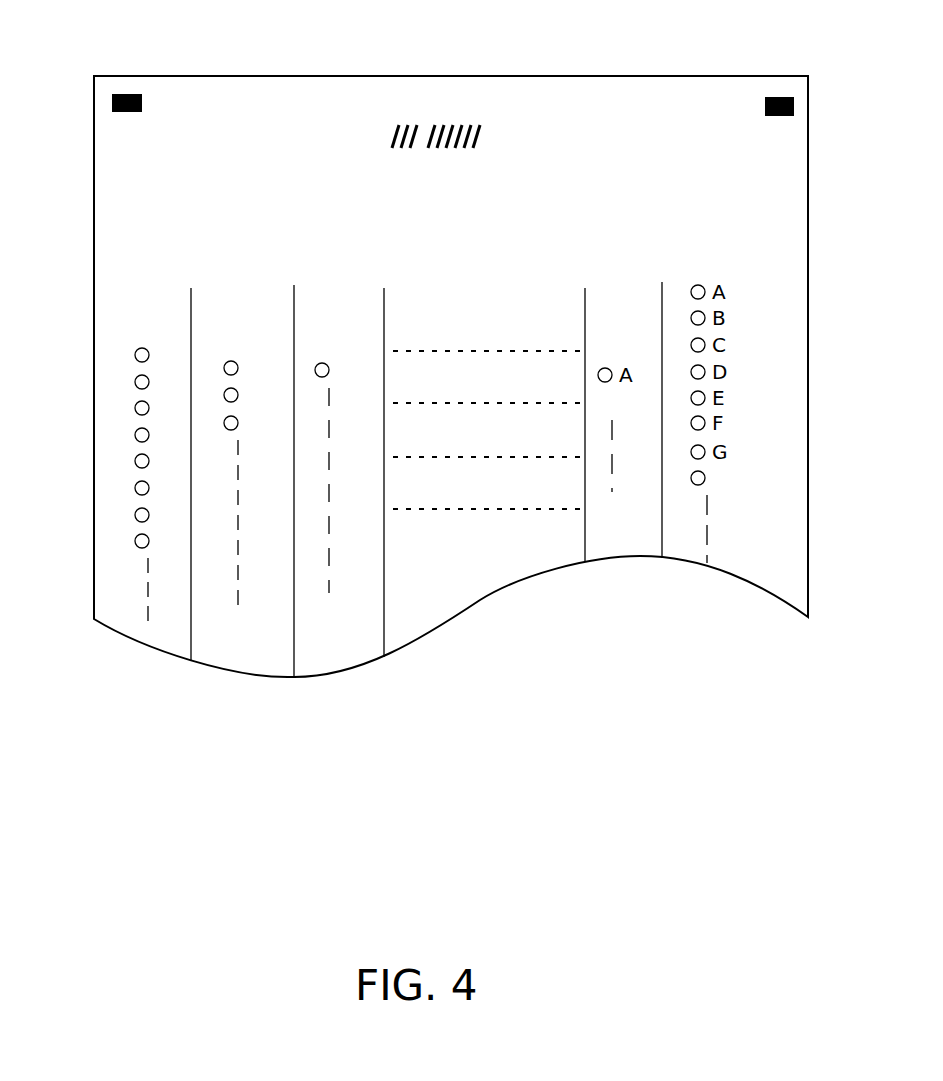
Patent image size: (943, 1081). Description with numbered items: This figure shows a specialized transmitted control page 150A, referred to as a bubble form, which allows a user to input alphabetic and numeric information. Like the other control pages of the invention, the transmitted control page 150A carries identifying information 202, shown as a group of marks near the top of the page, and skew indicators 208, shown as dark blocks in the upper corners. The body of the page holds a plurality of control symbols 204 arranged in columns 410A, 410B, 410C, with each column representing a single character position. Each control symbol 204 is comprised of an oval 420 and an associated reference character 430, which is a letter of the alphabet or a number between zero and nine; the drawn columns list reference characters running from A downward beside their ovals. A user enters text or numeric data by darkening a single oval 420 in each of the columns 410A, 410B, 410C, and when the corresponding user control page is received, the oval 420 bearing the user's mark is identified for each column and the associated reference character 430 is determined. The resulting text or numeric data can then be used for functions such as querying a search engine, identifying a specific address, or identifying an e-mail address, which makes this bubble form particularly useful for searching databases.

The transmitted control page 150A is at (451, 339).
The identifying information 202 is at (488, 93).
The control symbol 204 is at (137, 403).
The skew indicator 208 is at (499, 63).
The column 410A is at (101, 496).
The column 410B is at (263, 504).
The column 410C is at (381, 505).
The oval 420 is at (747, 496).
The reference character 430 is at (758, 466).